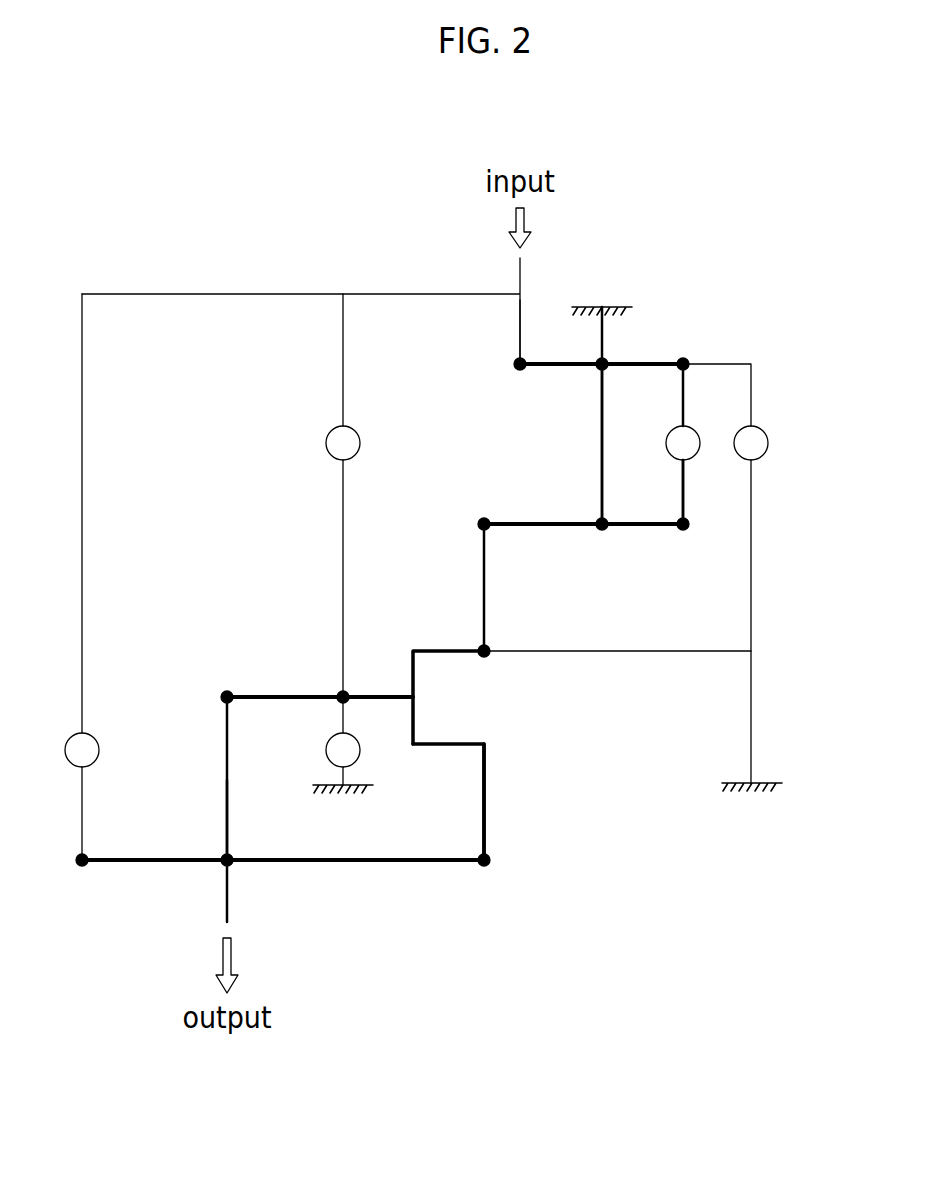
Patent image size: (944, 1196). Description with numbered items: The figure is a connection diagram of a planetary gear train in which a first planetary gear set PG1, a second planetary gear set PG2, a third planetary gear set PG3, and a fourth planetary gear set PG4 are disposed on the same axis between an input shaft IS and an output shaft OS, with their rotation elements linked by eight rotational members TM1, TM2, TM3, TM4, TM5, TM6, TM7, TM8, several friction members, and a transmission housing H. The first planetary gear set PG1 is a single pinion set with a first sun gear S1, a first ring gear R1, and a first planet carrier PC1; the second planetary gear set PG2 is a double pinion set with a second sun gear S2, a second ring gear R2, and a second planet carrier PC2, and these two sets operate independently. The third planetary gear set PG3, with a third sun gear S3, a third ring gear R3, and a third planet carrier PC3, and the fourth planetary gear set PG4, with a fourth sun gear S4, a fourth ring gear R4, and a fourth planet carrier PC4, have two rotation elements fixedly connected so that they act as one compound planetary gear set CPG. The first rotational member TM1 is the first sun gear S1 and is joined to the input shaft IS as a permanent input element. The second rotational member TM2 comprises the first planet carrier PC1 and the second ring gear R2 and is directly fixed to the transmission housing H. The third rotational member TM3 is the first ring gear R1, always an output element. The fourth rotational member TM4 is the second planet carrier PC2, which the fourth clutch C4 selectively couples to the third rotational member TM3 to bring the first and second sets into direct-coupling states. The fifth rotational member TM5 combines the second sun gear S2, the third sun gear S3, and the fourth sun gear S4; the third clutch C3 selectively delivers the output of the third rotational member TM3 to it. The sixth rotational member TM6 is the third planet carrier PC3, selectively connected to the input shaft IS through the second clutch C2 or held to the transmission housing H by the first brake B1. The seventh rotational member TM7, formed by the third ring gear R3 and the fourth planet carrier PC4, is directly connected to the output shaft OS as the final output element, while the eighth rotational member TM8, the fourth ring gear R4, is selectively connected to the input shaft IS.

The input shaft IS is at (406, 294).
The output shaft OS is at (227, 893).
The first rotational member TM1 is at (520, 318).
The second rotational member TM2 is at (602, 460).
The third rotational member TM3 is at (683, 400).
The fourth rotational member TM4 is at (683, 490).
The fifth rotational member TM5 is at (712, 651).
The sixth rotational member TM6 is at (343, 718).
The seventh rotational member TM7 is at (227, 826).
The eighth rotational member TM8 is at (82, 795).
The first planetary gear set PG1 is at (727, 350).
The second planetary gear set PG2 is at (470, 494).
The third planetary gear set PG3 is at (274, 662).
The fourth planetary gear set PG4 is at (404, 876).
The first sun gear S1 is at (517, 370).
The second sun gear S2 is at (484, 524).
The third sun gear S3 is at (488, 650).
The fourth sun gear S4 is at (487, 866).
The first planet carrier PC1 is at (595, 370).
The second planet carrier PC2 is at (680, 532).
The third planet carrier PC3 is at (347, 690).
The fourth planet carrier PC4 is at (232, 866).
The first ring gear R1 is at (672, 372).
The second ring gear R2 is at (602, 530).
The third ring gear R3 is at (225, 693).
The fourth ring gear R4 is at (82, 866).
The second clutch C2 is at (343, 495).
The third clutch C3 is at (751, 604).
The fourth clutch C4 is at (683, 443).
The first brake B1 is at (343, 759).
The transmission housing H is at (606, 304).
The compound planetary gear set CPG is at (519, 702).